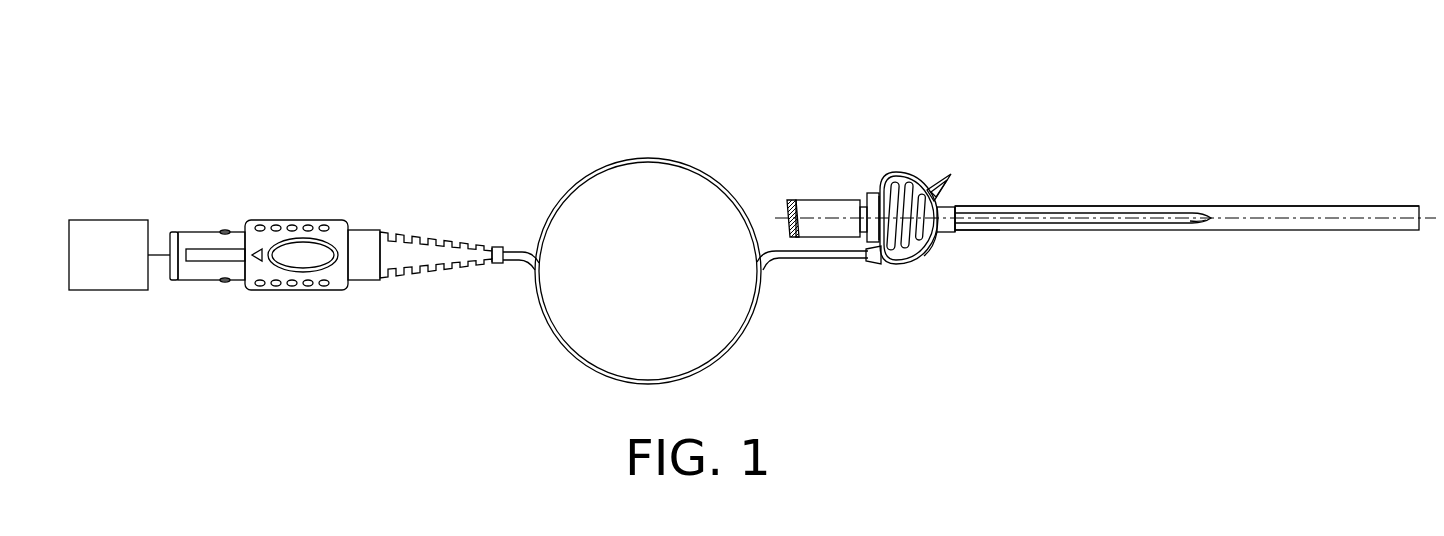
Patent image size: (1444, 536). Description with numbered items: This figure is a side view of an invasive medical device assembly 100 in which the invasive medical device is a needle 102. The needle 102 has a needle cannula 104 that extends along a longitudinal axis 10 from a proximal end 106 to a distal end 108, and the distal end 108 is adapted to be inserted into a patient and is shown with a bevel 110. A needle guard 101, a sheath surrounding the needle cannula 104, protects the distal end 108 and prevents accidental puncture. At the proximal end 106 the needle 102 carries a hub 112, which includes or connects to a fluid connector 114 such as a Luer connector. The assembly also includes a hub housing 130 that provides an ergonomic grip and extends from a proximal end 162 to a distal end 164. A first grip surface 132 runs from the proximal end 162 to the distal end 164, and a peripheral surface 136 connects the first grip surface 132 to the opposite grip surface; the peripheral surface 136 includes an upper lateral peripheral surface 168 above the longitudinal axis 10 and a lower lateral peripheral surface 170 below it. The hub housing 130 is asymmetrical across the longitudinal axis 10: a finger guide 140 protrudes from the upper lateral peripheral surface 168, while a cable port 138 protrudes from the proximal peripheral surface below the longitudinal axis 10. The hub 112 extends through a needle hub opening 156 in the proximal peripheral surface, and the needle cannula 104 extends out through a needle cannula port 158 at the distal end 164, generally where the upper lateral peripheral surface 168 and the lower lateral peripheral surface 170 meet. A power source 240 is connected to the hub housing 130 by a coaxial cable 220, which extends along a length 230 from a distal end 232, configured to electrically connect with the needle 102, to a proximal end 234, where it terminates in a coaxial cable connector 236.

The longitudinal axis 10 is at (1195, 210).
The invasive medical device assembly 100 is at (573, 100).
The needle guard 101 is at (1310, 207).
The needle 102 is at (1078, 203).
The needle cannula 104 is at (1125, 213).
The proximal end 106 is at (982, 237).
The distal end 108 is at (1198, 230).
The bevel 110 is at (1203, 210).
The hub 112 is at (825, 200).
The fluid connector 114 is at (790, 198).
The hub housing 130 is at (940, 227).
The first grip surface 132 is at (895, 262).
The peripheral surface 136 is at (940, 260).
The cable port 138 is at (870, 265).
The finger guide 140 is at (947, 180).
The needle hub opening 156 is at (876, 194).
The needle cannula port 158 is at (958, 234).
The proximal end 162 is at (863, 188).
The distal end 164 is at (967, 193).
The upper lateral peripheral surface 168 is at (924, 197).
The lower lateral peripheral surface 170 is at (928, 264).
The coaxial cable 220 is at (663, 295).
The length 230 is at (565, 355).
The distal end 232 is at (828, 265).
The proximal end 234 is at (522, 248).
The coaxial cable connector 236 is at (272, 222).
The power source 240 is at (127, 220).